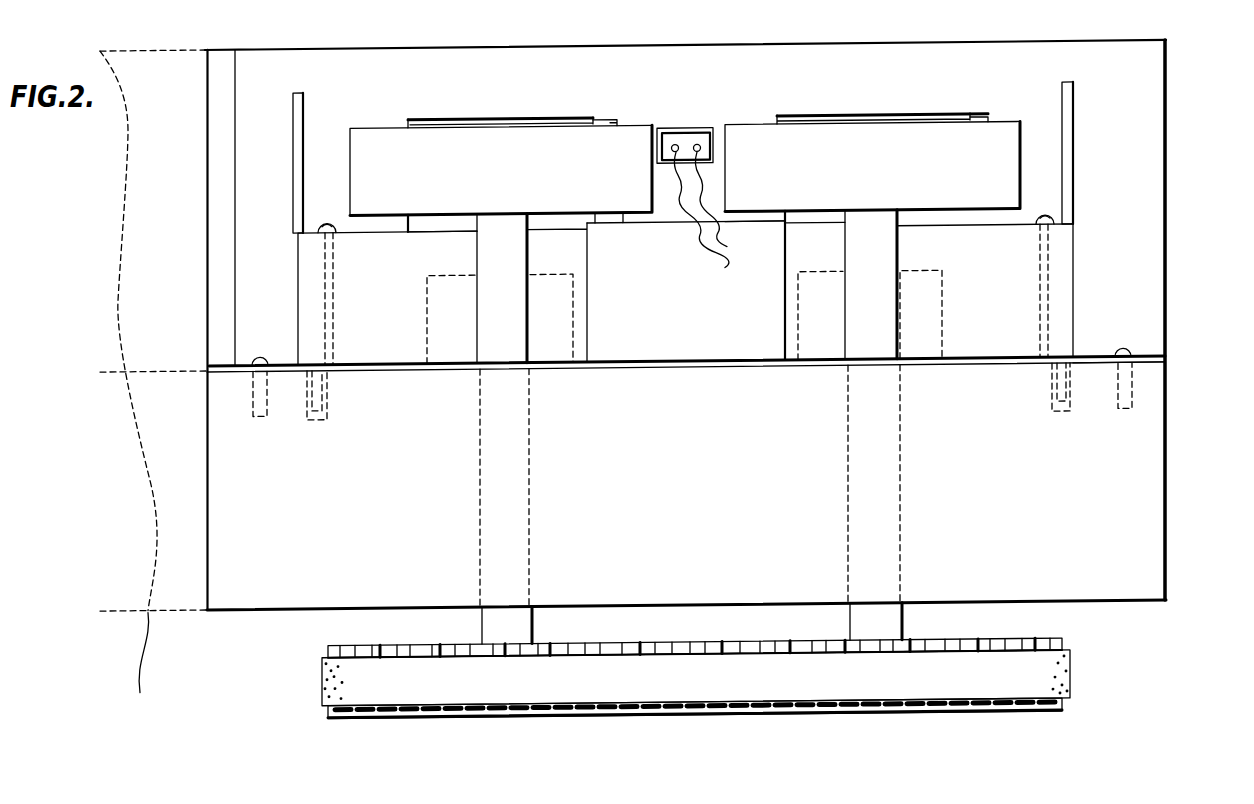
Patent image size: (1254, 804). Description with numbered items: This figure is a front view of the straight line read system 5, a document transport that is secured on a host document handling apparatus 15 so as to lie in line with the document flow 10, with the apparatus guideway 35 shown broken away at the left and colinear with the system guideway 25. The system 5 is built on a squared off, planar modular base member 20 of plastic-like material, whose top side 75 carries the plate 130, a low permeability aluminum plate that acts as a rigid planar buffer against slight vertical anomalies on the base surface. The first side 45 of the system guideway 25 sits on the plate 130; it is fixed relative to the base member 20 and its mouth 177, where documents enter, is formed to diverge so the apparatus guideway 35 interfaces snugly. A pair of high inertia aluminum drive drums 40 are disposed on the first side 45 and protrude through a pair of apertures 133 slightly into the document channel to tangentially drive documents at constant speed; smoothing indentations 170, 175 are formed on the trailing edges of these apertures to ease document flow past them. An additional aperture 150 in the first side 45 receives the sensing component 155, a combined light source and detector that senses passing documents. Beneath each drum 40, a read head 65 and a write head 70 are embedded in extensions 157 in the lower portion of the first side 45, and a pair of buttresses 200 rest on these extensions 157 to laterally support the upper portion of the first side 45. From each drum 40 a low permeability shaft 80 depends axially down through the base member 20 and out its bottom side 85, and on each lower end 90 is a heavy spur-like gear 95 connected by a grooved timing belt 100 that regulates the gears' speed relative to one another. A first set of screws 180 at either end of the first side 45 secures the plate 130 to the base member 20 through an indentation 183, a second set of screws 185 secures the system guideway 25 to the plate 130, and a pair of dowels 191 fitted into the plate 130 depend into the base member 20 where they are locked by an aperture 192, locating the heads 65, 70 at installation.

The straight line read system 5 is at (1195, 432).
The document flow 10 is at (1232, 237).
The host document handling apparatus 15 is at (134, 675).
The modular base member 20 is at (1167, 502).
The system guideway 25 is at (1167, 173).
The apparatus guideway 35 is at (126, 162).
The high inertia drum 40 is at (477, 207).
The first side 45 is at (698, 102).
The read head 65 is at (427, 318).
The write head 70 is at (942, 318).
The top side of the base member 75 is at (1093, 373).
The shaft 80 is at (478, 255).
The bottom side of the base member 85 is at (1100, 611).
The lower end of the shaft 90 is at (535, 645).
The spur-like gear 95 is at (688, 722).
The timing belt 100 is at (1072, 685).
The plate 130 is at (1167, 366).
The drive drum aperture 133 is at (514, 121).
The additional aperture 150 is at (703, 133).
The sensing component 155 is at (668, 140).
The extension 157 is at (343, 233).
The smoothing indentation 170 is at (600, 121).
The smoothing indentation 175 is at (973, 122).
The mouth of the system guideway 177 is at (207, 163).
The first set of screws 180 is at (253, 406).
The indentation 183 is at (266, 334).
The second set of screws 185 is at (334, 290).
The dowel 191 is at (323, 398).
The aperture 192 is at (327, 424).
The buttress 200 is at (293, 133).